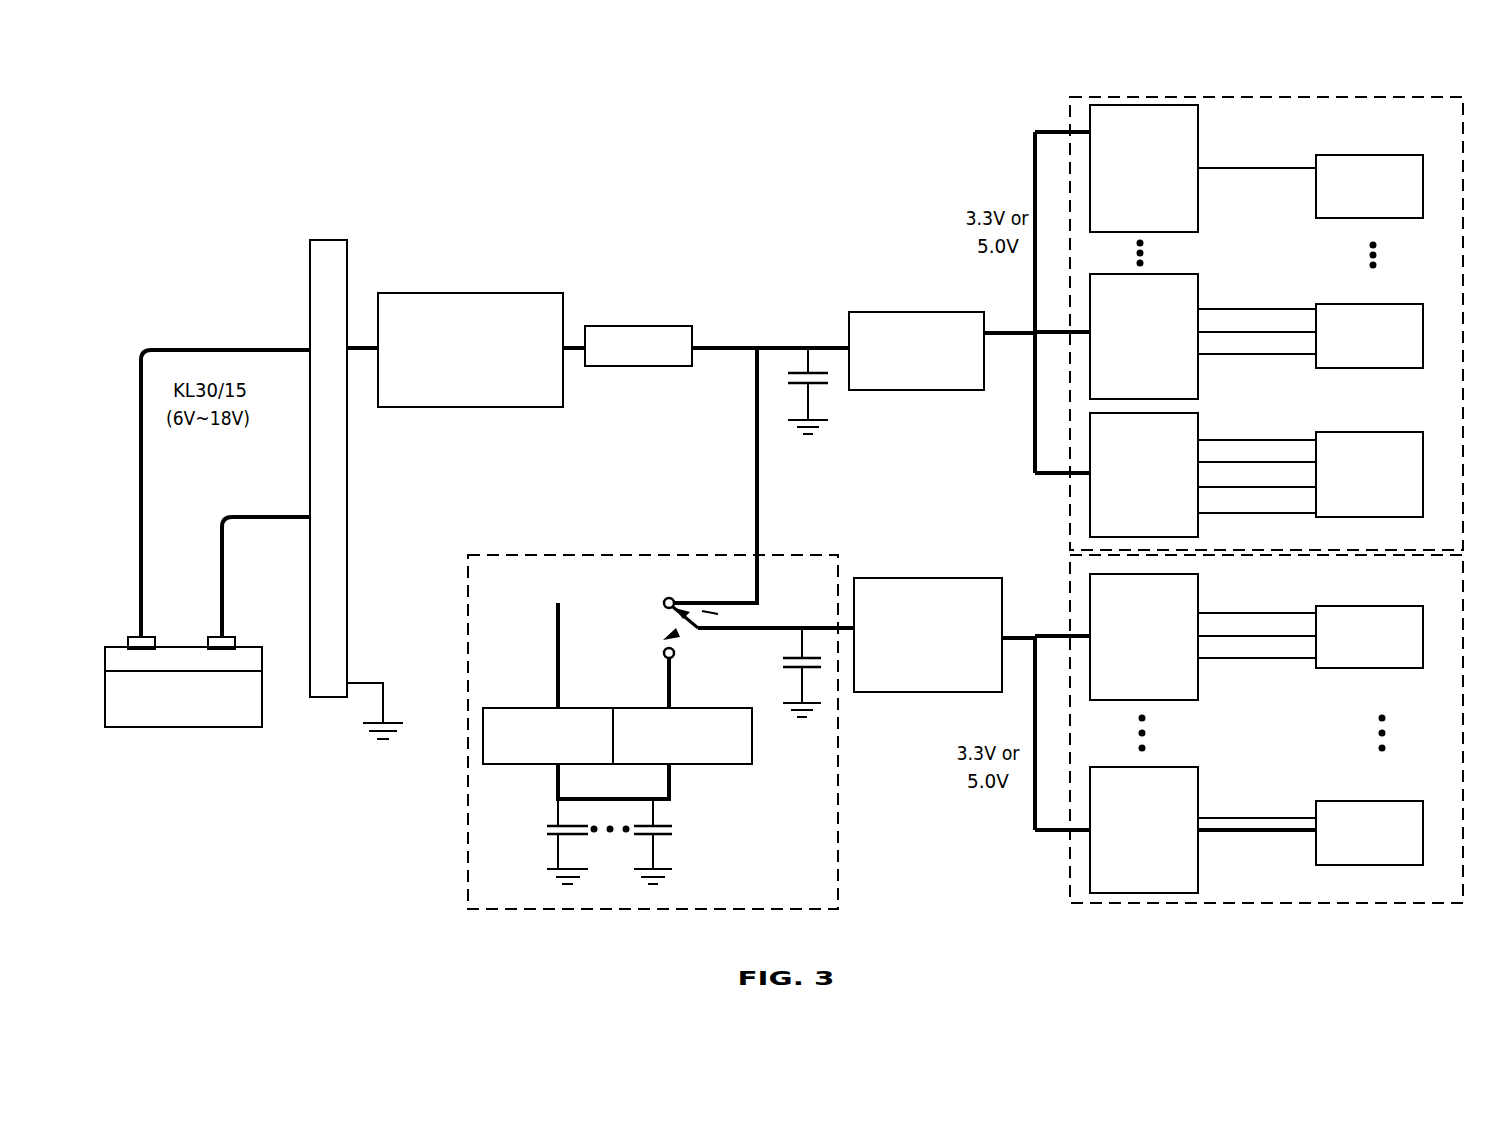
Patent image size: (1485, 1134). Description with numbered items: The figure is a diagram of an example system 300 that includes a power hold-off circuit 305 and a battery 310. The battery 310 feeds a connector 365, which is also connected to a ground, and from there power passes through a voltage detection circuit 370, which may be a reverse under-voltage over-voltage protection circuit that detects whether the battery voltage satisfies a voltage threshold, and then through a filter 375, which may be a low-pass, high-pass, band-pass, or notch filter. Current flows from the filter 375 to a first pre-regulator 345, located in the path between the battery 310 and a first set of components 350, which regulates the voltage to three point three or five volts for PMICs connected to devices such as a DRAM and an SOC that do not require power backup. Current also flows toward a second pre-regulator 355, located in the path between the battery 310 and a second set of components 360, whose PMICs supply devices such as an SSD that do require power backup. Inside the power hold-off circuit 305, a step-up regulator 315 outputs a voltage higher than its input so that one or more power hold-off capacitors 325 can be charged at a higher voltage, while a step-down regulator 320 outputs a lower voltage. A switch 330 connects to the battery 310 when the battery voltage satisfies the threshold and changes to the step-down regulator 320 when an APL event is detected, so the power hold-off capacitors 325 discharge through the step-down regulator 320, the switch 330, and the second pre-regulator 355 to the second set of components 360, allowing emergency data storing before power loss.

The system 300 is at (210, 92).
The power hold-off circuit 305 is at (838, 890).
The battery 310 is at (183, 698).
The step-up regulator 315 is at (548, 699).
The step-down regulator 320 is at (682, 711).
The power hold-off capacitors 325 is at (675, 824).
The switch 330 is at (694, 582).
The first pre-regulator 345 is at (916, 365).
The first set of components 350 is at (1249, 308).
The second pre-regulator 355 is at (928, 649).
The second set of components 360 is at (1249, 745).
The connector 365 is at (305, 468).
The voltage detection circuit 370 is at (470, 335).
The filter 375 is at (638, 331).